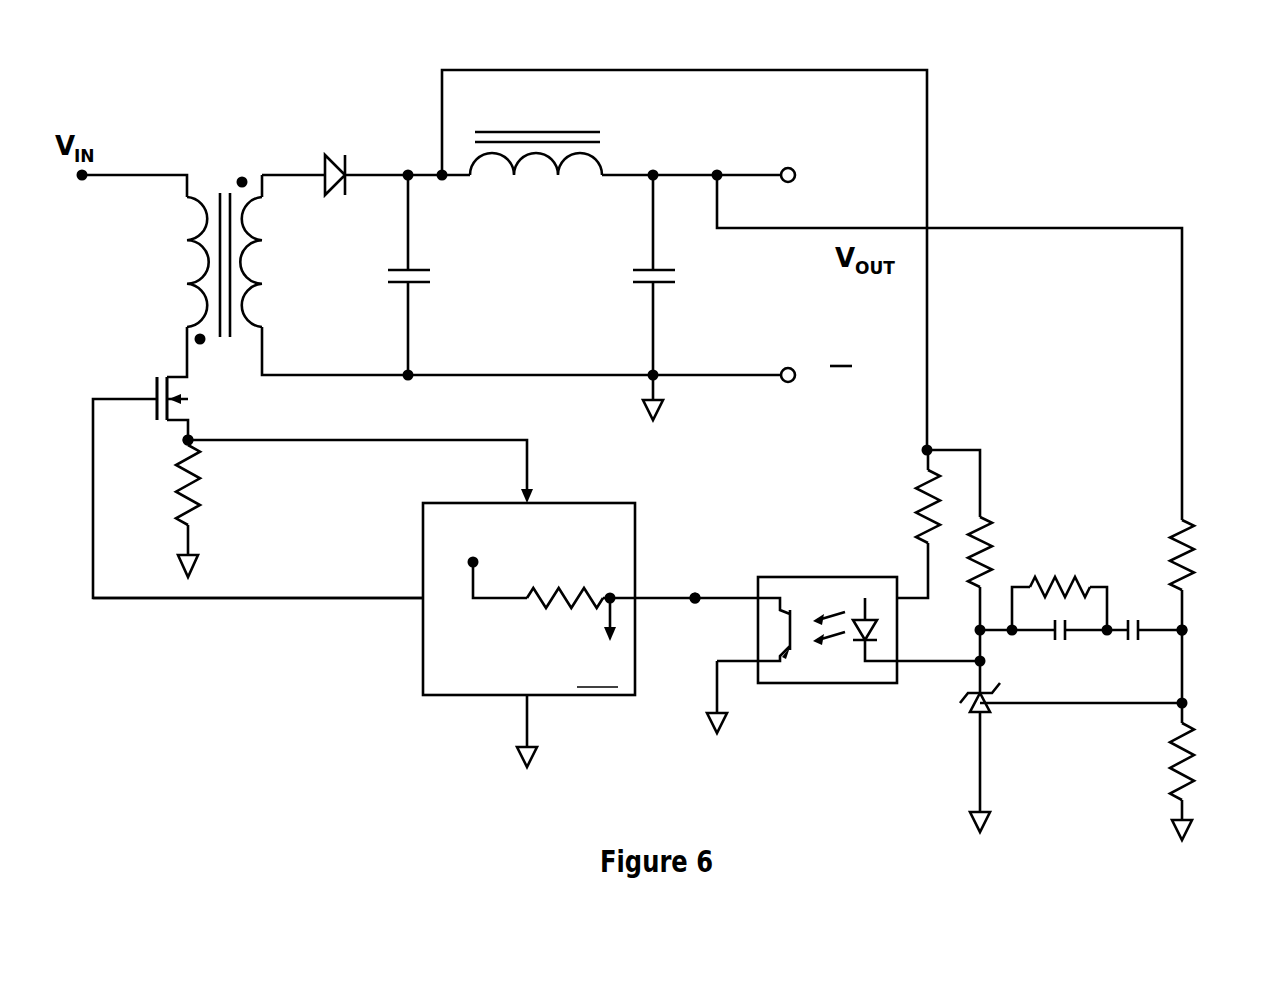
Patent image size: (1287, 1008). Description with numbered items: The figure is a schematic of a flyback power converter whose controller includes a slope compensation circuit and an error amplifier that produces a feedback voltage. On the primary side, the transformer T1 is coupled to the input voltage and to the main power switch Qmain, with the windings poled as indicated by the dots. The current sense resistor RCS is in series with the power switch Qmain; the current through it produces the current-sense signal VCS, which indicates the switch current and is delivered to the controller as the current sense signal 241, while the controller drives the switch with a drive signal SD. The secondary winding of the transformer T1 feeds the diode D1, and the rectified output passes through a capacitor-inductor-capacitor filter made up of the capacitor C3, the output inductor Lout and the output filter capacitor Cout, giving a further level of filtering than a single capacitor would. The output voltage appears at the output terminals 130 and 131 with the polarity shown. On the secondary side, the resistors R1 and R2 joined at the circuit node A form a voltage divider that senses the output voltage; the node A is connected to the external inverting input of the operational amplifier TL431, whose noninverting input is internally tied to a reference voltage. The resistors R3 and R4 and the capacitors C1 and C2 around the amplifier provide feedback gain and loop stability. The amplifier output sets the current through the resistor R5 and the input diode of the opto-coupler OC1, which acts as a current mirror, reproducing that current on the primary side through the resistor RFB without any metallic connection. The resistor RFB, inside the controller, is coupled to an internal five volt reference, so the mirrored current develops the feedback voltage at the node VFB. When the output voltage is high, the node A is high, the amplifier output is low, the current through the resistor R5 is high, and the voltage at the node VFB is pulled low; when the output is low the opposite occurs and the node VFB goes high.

The output terminal 130 is at (803, 163).
The output terminal 131 is at (799, 389).
The current sense signal 241 is at (532, 476).
The transformer T1 is at (203, 163).
The diode D1 is at (325, 143).
The output inductor Lout is at (538, 188).
The capacitor C3 is at (388, 292).
The output filter capacitor Cout is at (634, 292).
The power switch Qmain is at (149, 367).
The current-sense signal VCS is at (232, 443).
The current sense resistor RCS is at (210, 495).
The drive signal line SD is at (357, 602).
The resistor RFB is at (584, 576).
The feedback voltage node VFB is at (706, 586).
The opto-coupler OC1 is at (831, 697).
The resistor R5 is at (904, 513).
The resistor R4 is at (1003, 542).
The resistor R1 is at (1157, 532).
The resistor R3 is at (1066, 562).
The circuit node A is at (1192, 622).
The capacitor C2 is at (1054, 654).
The capacitor C1 is at (1127, 654).
The operational amplifier TL431 is at (961, 716).
The resistor R2 is at (1159, 759).